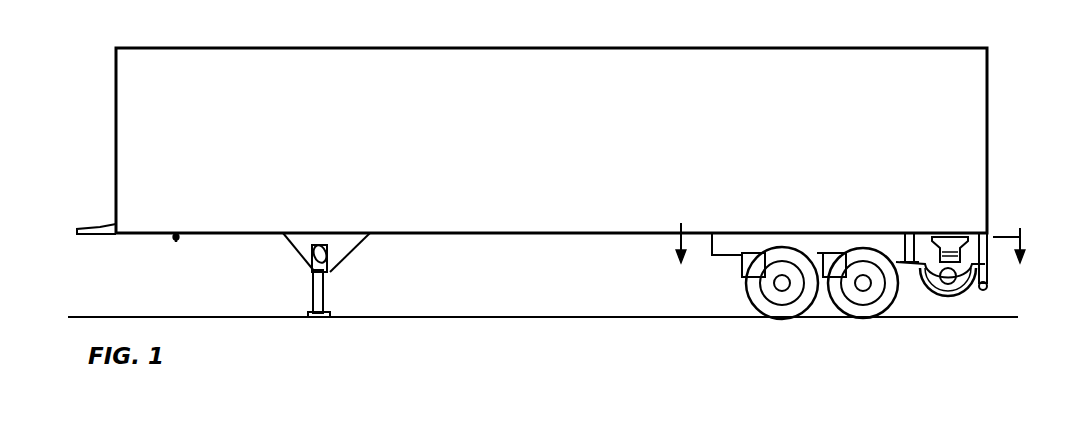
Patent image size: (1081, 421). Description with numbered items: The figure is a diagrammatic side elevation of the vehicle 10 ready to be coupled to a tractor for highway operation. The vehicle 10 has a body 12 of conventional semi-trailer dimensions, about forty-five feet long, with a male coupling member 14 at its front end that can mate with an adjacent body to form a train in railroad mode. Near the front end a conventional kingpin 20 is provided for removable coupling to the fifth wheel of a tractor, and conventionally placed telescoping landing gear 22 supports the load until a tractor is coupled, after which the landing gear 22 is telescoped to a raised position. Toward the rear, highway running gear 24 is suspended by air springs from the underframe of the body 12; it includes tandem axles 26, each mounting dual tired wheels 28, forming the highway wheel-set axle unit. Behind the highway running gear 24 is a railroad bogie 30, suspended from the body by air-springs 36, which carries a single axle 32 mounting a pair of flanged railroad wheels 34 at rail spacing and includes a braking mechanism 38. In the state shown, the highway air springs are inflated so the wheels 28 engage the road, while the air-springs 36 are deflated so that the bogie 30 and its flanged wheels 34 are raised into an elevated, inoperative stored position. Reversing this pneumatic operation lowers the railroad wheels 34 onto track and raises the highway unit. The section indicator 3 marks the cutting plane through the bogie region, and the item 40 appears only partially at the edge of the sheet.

The vehicle 10 is at (1012, 120).
The body 12 is at (978, 78).
The male coupling member 14 is at (90, 236).
The kingpin 20 is at (178, 241).
The landing gear 22 is at (326, 293).
The highway running gear 24 is at (726, 336).
The tandem axles 26 is at (774, 281).
The dual tired wheels 28 is at (760, 303).
The railroad bogie 30 is at (985, 304).
The single axle 32 is at (1080, 315).
The flanged railroad wheels 34 is at (951, 300).
The air-springs 36 is at (950, 236).
The braking mechanism 38 is at (915, 232).
The underride guard 40 is at (200, 417).
The section line for FIG. 3 is at (851, 256).